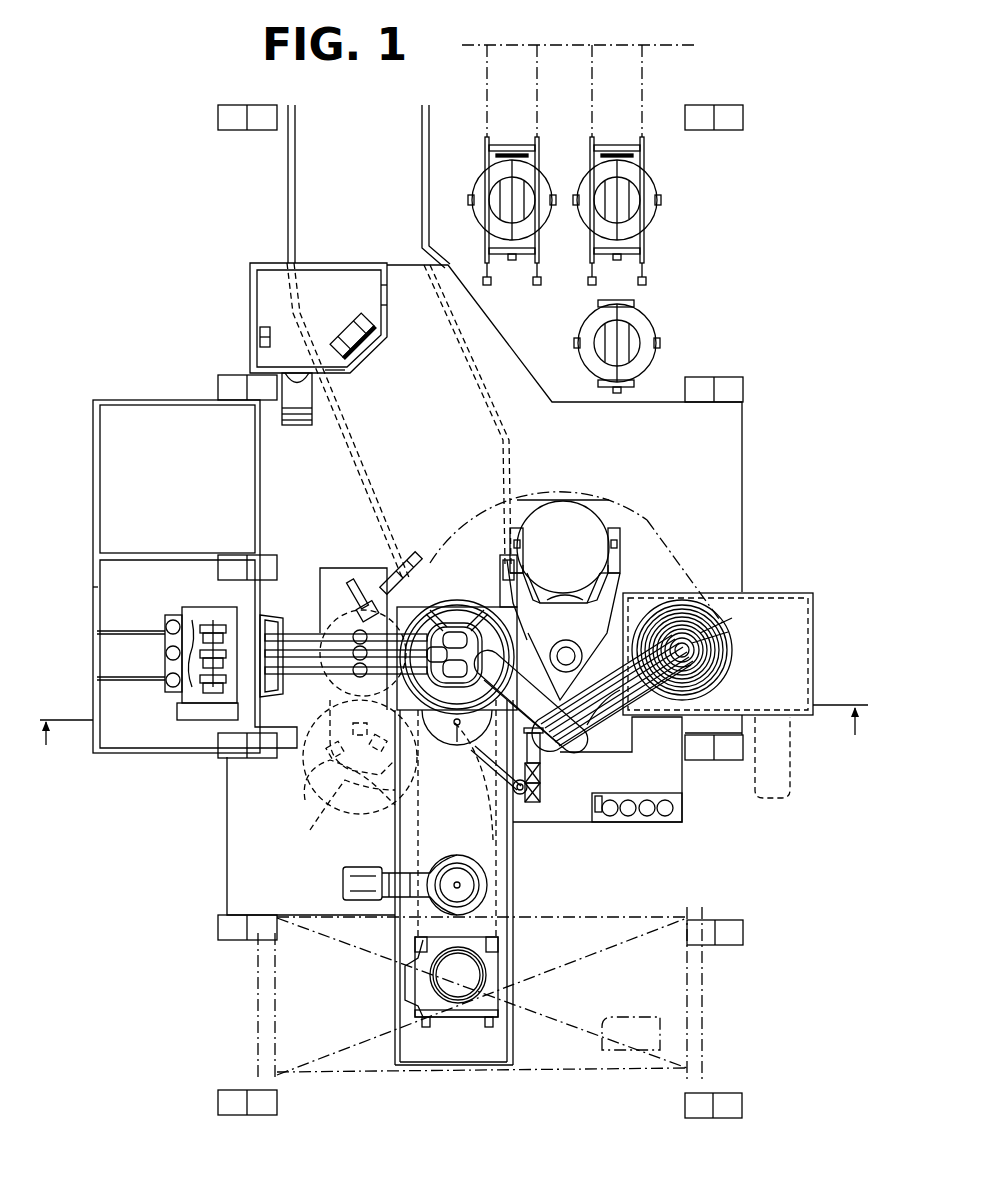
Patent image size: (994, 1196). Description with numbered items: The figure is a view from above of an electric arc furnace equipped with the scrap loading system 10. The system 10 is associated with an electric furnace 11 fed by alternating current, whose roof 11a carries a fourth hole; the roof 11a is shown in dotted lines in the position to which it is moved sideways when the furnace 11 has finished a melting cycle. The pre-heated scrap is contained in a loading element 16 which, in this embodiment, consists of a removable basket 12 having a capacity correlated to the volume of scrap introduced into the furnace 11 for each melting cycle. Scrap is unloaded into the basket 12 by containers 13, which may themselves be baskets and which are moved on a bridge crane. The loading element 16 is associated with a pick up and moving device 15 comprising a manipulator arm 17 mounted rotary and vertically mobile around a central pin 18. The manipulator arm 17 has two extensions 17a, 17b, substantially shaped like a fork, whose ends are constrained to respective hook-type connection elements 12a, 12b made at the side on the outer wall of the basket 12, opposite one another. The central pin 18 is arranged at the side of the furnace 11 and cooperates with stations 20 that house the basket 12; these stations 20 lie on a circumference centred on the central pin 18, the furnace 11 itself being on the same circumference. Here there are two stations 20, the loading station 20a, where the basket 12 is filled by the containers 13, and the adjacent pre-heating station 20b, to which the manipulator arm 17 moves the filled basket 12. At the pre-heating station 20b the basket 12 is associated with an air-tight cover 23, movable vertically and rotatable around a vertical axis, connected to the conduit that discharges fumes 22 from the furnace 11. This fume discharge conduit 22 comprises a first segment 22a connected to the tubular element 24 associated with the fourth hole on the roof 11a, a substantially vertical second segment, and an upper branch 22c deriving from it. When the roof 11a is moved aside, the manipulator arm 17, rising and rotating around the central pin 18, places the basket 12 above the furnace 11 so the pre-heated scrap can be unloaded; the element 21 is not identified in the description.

The loading system 10 is at (760, 473).
The electric furnace 11 is at (365, 590).
The roof 11a is at (343, 696).
The removable basket 12 is at (593, 530).
The hook-type connection element 12a is at (510, 567).
The hook-type connection element 12b is at (618, 563).
The containers 13 is at (492, 189).
The pick up and moving device 15 is at (623, 567).
The loading element 16 is at (588, 493).
The manipulator arm 17 is at (545, 627).
The extension 17a is at (547, 630).
The extension 17b is at (633, 577).
The central pin 18 is at (627, 600).
The stations 20 is at (535, 495).
The loading station 20a is at (567, 495).
The pre-heating station 20b is at (727, 682).
The take-up box 21 is at (787, 697).
The fume discharge conduit 22 is at (577, 752).
The first segment 22a is at (543, 753).
The upper branch 22c is at (627, 683).
The air-tight cover 23 is at (705, 628).
The tubular element 24 is at (477, 820).